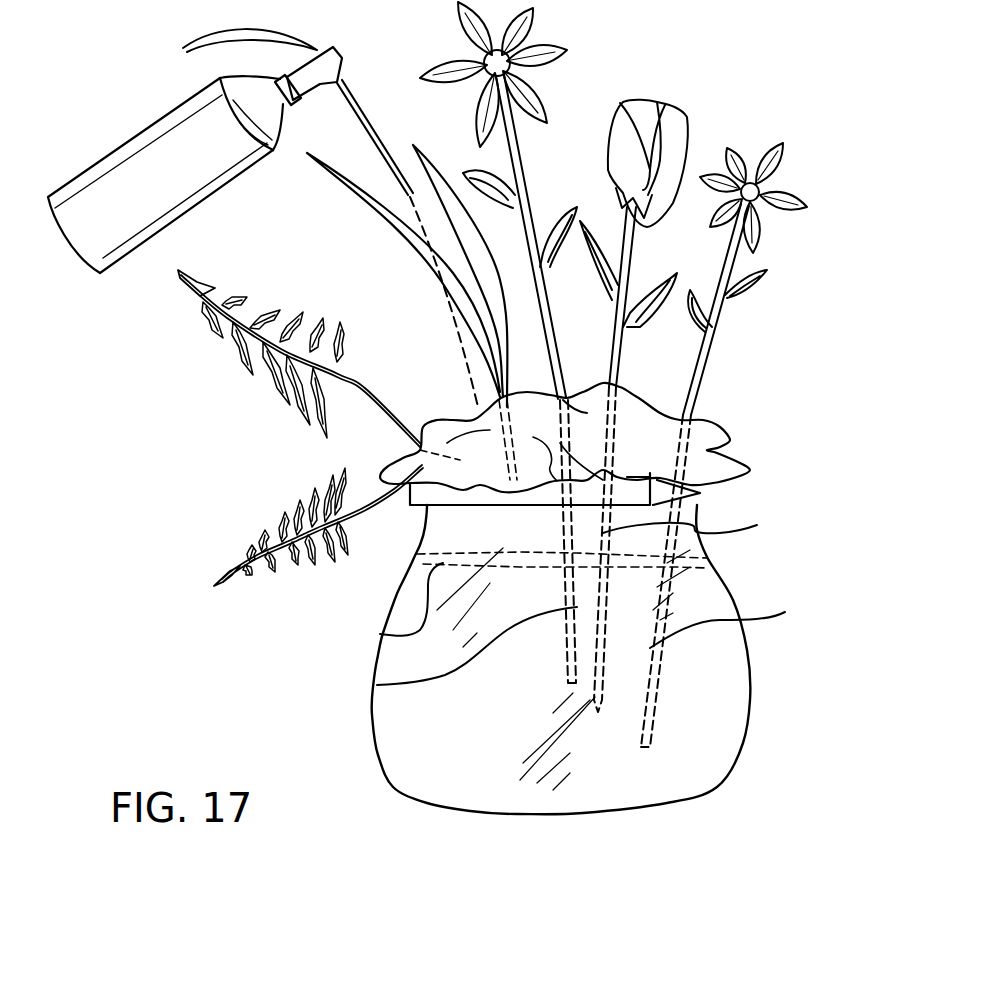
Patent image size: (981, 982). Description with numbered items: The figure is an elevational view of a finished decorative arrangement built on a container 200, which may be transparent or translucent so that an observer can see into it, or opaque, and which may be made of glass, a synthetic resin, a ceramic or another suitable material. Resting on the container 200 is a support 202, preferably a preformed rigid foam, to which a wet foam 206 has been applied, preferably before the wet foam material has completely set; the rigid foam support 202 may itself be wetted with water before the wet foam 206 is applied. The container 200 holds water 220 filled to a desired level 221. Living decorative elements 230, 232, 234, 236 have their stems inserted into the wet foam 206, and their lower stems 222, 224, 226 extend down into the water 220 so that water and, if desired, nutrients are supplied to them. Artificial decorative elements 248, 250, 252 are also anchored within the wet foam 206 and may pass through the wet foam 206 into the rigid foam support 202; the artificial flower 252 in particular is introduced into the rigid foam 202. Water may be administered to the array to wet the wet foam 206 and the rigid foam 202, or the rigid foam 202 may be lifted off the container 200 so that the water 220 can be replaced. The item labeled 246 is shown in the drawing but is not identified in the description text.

The container 200 is at (742, 745).
The support 202 is at (412, 507).
The wet foam 206 is at (393, 462).
The water 220 is at (718, 753).
The level 221 is at (380, 634).
The lower stem 222 is at (785, 612).
The lower stem 224 is at (757, 525).
The lower stem 226 is at (377, 685).
The living decorative element 230 is at (700, 383).
The living decorative element 232 is at (697, 157).
The living decorative element 234 is at (523, 157).
The living decorative element 236 is at (222, 577).
The spray can 246 is at (127, 142).
The artificial decorative element 248 is at (482, 278).
The artificial decorative element 250 is at (407, 237).
The artificial flower 252 is at (268, 375).